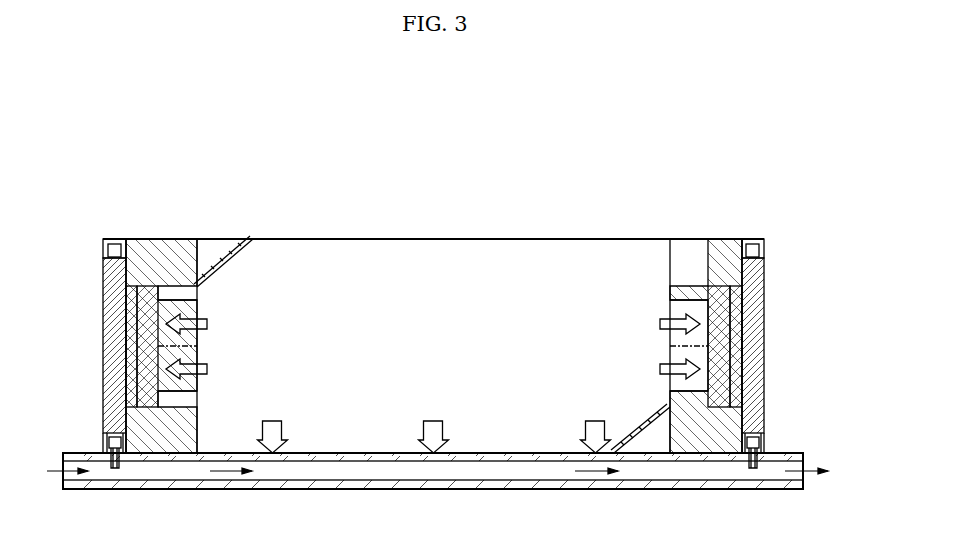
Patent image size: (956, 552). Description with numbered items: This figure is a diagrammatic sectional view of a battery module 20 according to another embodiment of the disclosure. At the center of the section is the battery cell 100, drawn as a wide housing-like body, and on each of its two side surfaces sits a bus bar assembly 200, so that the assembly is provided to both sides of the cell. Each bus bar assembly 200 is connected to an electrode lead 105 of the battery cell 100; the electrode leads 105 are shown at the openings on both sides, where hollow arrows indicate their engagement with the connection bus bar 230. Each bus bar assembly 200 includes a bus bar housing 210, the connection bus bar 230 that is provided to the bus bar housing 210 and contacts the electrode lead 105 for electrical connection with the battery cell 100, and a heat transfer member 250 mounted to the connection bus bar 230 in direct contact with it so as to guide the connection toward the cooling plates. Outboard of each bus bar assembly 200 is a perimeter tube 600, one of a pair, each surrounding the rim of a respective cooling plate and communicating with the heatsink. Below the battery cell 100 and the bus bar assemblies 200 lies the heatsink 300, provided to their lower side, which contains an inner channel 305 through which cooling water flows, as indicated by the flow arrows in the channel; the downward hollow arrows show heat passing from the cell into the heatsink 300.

The battery module 20 is at (120, 140).
The battery cell 100 is at (530, 257).
The electrode lead 105 is at (184, 307).
The bus bar assembly 200 is at (168, 226).
The bus bar housing 210 is at (708, 255).
The connection bus bar 230 is at (720, 353).
The heat transfer member 250 is at (737, 323).
The heatsink 300 is at (401, 490).
The inner channel 305 is at (480, 470).
The perimeter tube 600 is at (103, 268).